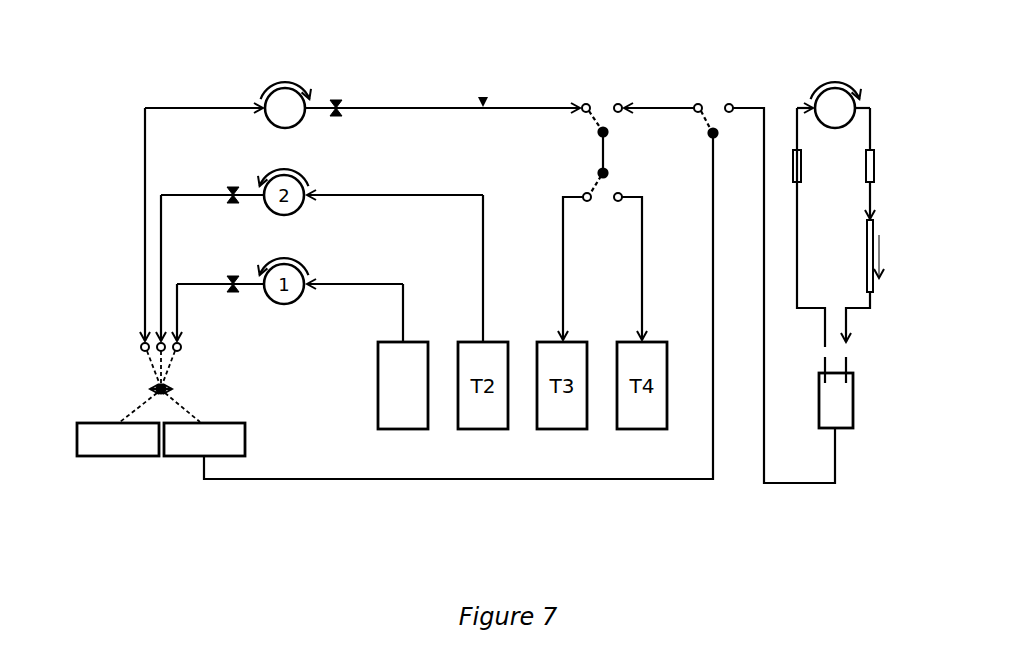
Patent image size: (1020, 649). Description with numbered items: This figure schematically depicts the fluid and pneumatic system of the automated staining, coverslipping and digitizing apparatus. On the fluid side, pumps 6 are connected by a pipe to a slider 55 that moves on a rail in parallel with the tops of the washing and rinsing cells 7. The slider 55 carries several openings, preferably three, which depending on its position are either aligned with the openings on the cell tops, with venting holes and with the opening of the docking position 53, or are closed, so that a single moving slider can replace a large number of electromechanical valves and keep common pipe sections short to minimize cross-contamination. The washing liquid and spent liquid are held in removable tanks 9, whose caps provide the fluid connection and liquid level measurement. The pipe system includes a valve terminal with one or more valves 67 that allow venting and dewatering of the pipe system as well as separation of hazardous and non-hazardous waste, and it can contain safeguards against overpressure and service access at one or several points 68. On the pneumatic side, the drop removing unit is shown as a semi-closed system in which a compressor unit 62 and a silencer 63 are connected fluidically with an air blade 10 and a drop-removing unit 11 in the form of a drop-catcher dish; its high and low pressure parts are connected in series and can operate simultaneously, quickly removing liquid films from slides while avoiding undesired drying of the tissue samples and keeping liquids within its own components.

The pump 6 is at (250, 75).
The overpressure safeguard or service access point 68 is at (358, 75).
The valve 67 is at (637, 77).
The compressor unit 62 is at (858, 82).
The silencer 63 is at (892, 163).
The air blade 10 is at (890, 255).
The drop-removing unit 11 is at (867, 400).
The slider 55 is at (133, 375).
The washing and rinsing cell 7 is at (119, 466).
The docking position 53 is at (221, 468).
The tank 9 is at (406, 437).